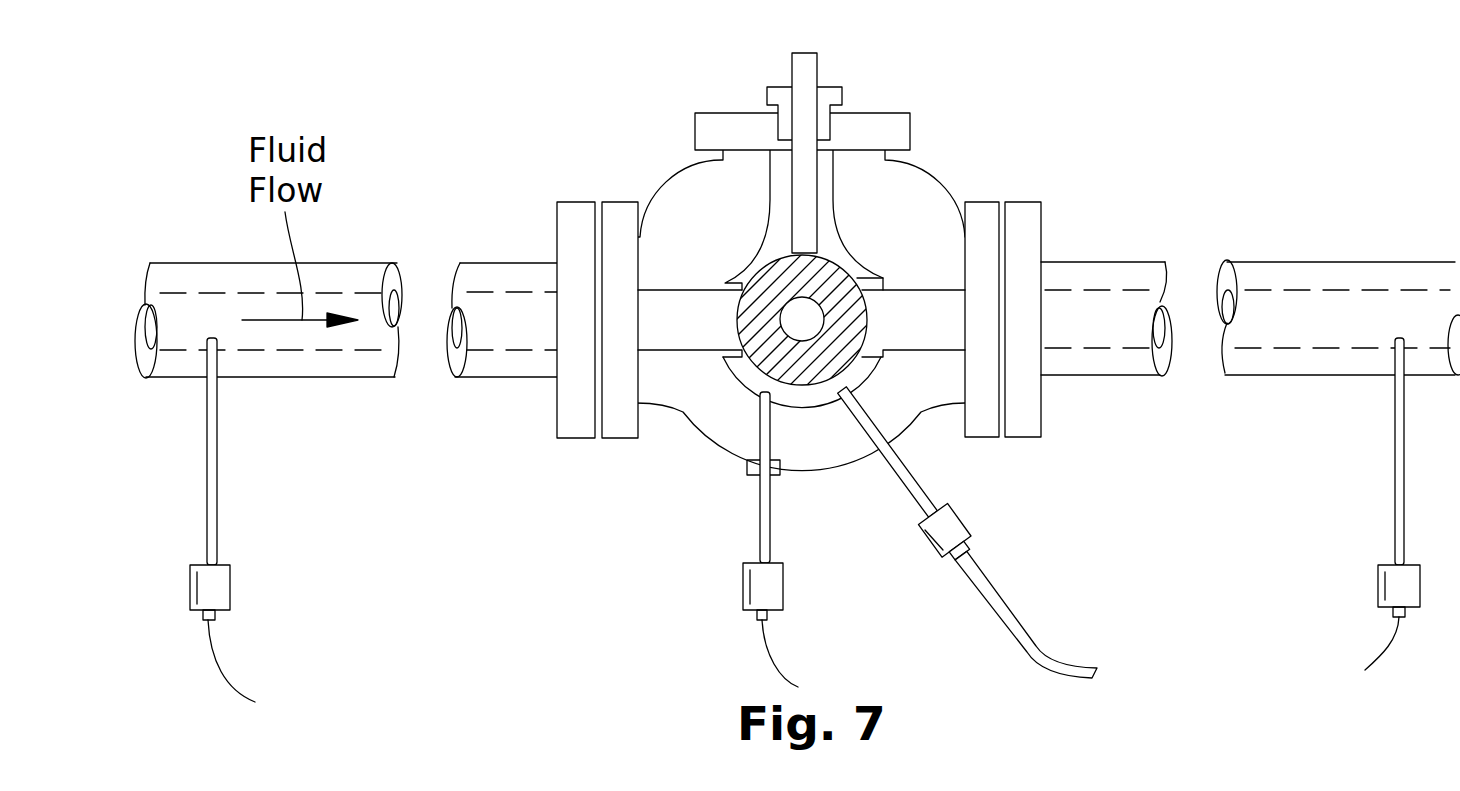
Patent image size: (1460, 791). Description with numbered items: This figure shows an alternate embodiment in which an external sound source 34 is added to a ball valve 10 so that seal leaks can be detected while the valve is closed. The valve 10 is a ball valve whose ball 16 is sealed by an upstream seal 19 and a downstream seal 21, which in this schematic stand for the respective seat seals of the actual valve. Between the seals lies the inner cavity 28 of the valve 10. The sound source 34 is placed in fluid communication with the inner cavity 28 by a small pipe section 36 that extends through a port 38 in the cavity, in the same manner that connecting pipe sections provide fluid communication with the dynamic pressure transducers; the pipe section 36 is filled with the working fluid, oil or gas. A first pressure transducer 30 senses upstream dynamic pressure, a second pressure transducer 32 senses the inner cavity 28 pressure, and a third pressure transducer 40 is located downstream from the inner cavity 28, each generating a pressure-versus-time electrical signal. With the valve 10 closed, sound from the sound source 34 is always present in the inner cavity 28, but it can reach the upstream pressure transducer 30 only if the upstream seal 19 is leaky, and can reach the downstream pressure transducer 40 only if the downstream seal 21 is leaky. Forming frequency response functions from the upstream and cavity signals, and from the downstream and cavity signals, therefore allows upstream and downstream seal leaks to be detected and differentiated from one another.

The valve 10 is at (1082, 126).
The ball 16 is at (833, 245).
The upstream seal 19 is at (722, 363).
The downstream seal 21 is at (922, 410).
The inner cavity 28 is at (790, 395).
The first pressure transducer 30 is at (215, 565).
The second pressure transducer 32 is at (743, 585).
The external sound source 34 is at (962, 530).
The small pipe section 36 is at (927, 492).
The port 38 is at (836, 396).
The third pressure transducer 40 is at (1392, 565).